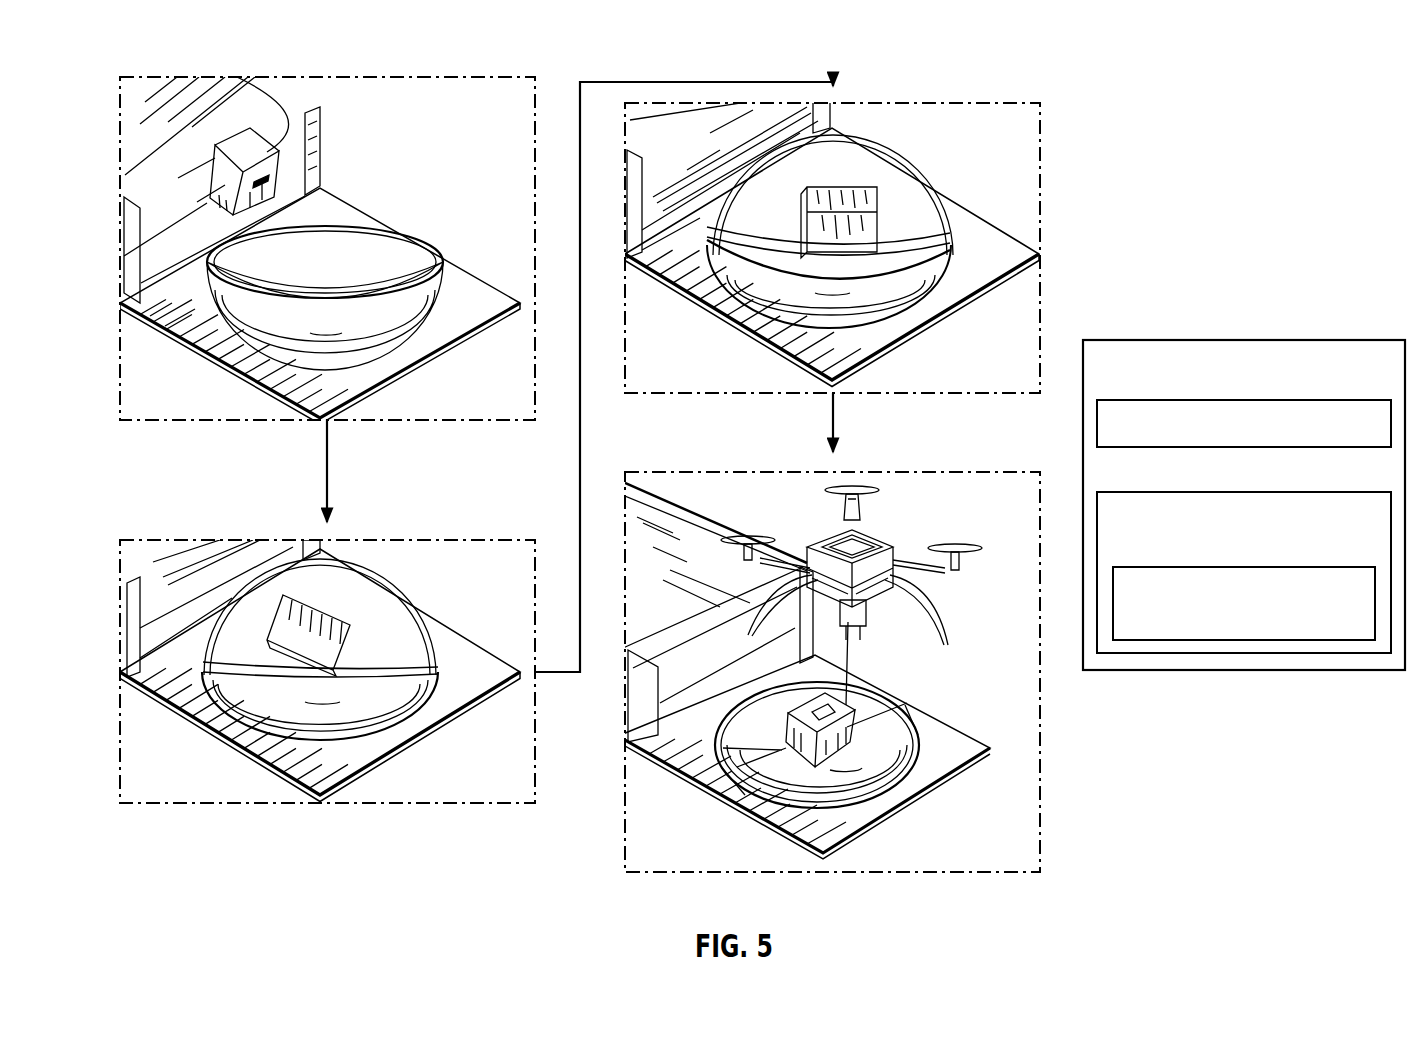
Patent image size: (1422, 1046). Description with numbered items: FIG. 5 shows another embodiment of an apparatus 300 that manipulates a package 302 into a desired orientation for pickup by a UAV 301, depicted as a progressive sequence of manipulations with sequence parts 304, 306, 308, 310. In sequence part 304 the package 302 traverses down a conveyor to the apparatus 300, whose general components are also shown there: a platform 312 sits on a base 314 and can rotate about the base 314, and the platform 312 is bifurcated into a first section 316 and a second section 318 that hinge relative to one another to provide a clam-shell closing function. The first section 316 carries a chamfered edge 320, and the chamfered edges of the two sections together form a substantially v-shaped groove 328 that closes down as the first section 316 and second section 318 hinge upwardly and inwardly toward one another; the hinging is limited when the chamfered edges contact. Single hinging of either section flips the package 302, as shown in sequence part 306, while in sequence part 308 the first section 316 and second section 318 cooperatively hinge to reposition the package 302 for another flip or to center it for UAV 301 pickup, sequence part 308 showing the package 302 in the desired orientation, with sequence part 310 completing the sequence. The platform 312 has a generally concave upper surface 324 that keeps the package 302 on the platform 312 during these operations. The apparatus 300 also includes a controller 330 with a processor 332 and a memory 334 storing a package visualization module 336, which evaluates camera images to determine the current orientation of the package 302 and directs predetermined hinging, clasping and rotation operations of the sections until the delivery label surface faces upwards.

The apparatus 300 is at (452, 150).
The UAV 301 is at (938, 522).
The package 302 is at (275, 157).
The sequence part 304 is at (520, 73).
The sequence part 306 is at (497, 524).
The sequence part 308 is at (1003, 88).
The sequence part 310 is at (997, 458).
The platform 312 is at (148, 305).
The base 314 is at (431, 236).
The first section 316 is at (385, 245).
The second section 318 is at (272, 323).
The chamfered edge 320 is at (738, 775).
The upper surface 324 is at (335, 278).
The v-shaped groove 328 is at (914, 702).
The controller 330 is at (1148, 340).
The processor 332 is at (1165, 400).
The memory 334 is at (1165, 492).
The package visualization module 336 is at (1180, 567).